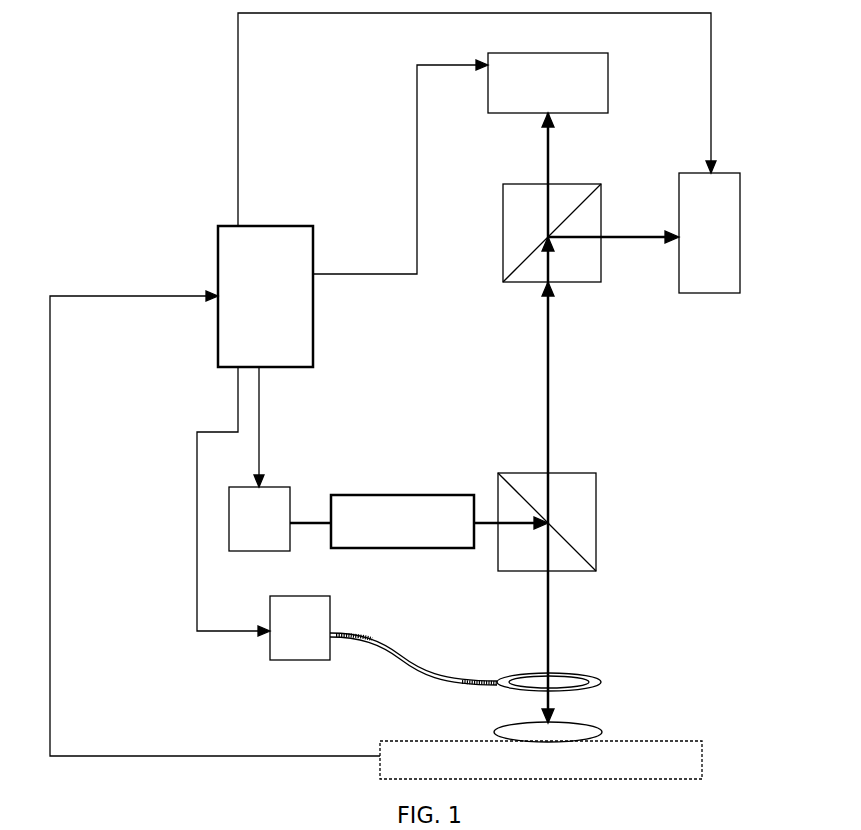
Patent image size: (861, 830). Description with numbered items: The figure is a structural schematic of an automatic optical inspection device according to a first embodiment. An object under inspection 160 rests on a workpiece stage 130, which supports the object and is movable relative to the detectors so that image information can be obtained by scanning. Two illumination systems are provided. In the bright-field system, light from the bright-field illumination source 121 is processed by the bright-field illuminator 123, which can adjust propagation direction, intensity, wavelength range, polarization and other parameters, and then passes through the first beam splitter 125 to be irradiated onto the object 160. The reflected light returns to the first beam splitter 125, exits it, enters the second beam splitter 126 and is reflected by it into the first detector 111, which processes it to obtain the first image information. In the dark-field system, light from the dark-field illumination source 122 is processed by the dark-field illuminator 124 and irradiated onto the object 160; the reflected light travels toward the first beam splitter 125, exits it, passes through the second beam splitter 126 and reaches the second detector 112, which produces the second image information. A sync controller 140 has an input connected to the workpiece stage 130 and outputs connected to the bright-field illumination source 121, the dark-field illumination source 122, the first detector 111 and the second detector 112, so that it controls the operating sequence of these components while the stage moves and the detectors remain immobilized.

The first detector 111 is at (713, 240).
The second detector 112 is at (562, 94).
The bright-field illumination source 121 is at (258, 513).
The dark-field illumination source 122 is at (312, 631).
The bright-field illuminator 123 is at (367, 523).
The dark-field illuminator 124 is at (593, 678).
The first beam splitter 125 is at (583, 520).
The second beam splitter 126 is at (522, 223).
The workpiece stage 130 is at (455, 762).
The sync controller 140 is at (260, 265).
The object under inspection 160 is at (562, 732).